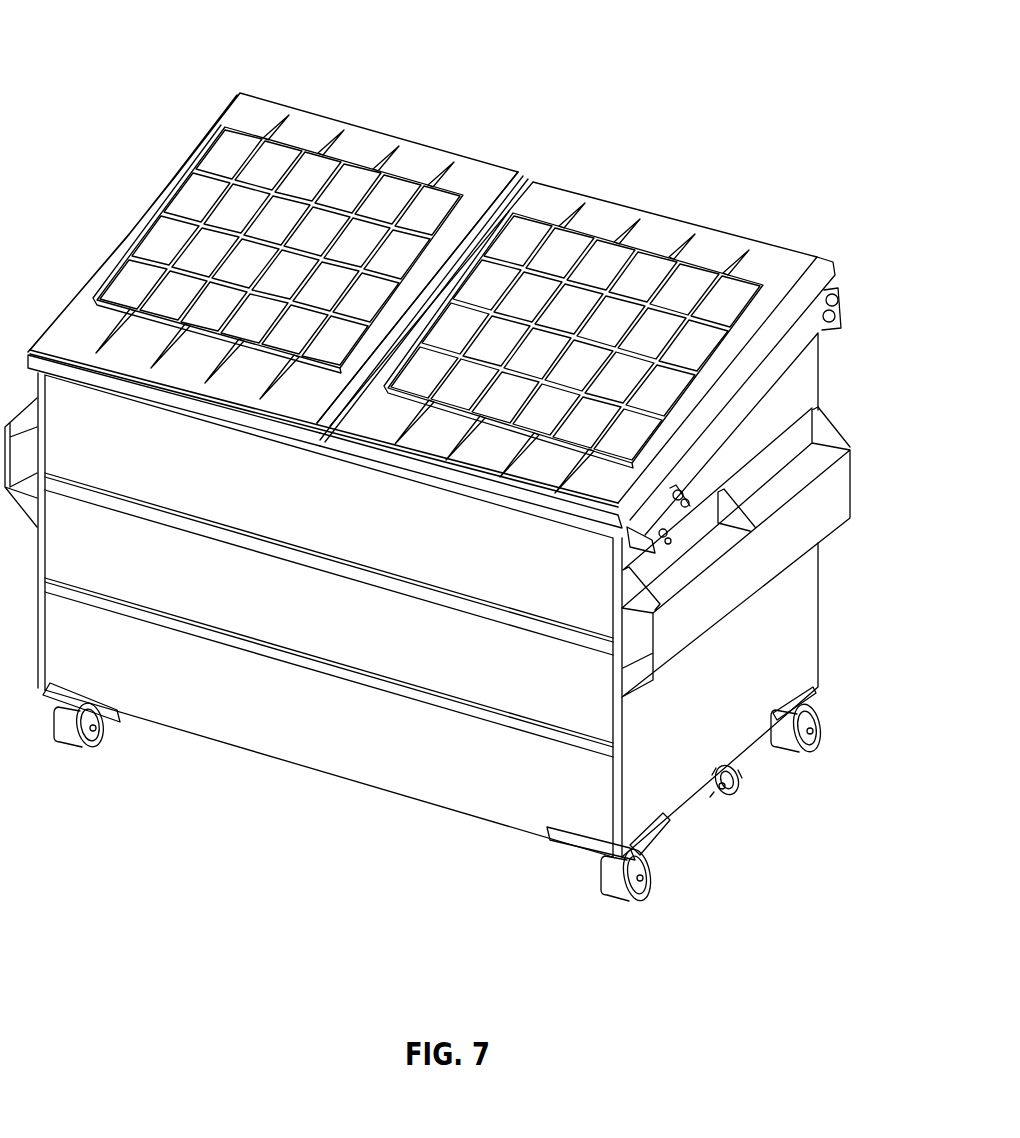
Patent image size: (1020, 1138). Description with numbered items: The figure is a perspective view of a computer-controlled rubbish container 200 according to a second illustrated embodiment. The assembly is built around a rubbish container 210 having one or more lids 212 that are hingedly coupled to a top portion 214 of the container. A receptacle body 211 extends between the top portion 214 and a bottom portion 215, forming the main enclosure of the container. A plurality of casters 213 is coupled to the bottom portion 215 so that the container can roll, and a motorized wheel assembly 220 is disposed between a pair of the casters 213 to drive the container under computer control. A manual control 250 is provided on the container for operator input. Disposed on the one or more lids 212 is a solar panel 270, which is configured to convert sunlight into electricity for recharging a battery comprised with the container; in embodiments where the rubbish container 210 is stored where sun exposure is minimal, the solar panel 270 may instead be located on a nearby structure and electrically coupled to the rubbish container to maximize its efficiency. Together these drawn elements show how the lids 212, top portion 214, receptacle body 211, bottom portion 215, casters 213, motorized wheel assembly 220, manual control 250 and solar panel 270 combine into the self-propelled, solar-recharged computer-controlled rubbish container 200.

The computer-controlled rubbish container 200 is at (131, 38).
The rubbish container 210 is at (840, 250).
The receptacle body 211 is at (364, 637).
The lid 212 is at (182, 396).
The caster 213 is at (72, 748).
The top portion 214 is at (418, 462).
The bottom portion 215 is at (306, 768).
The motorized wheel assembly 220 is at (722, 799).
The manual control 250 is at (650, 553).
The solar panel 270 is at (287, 160).